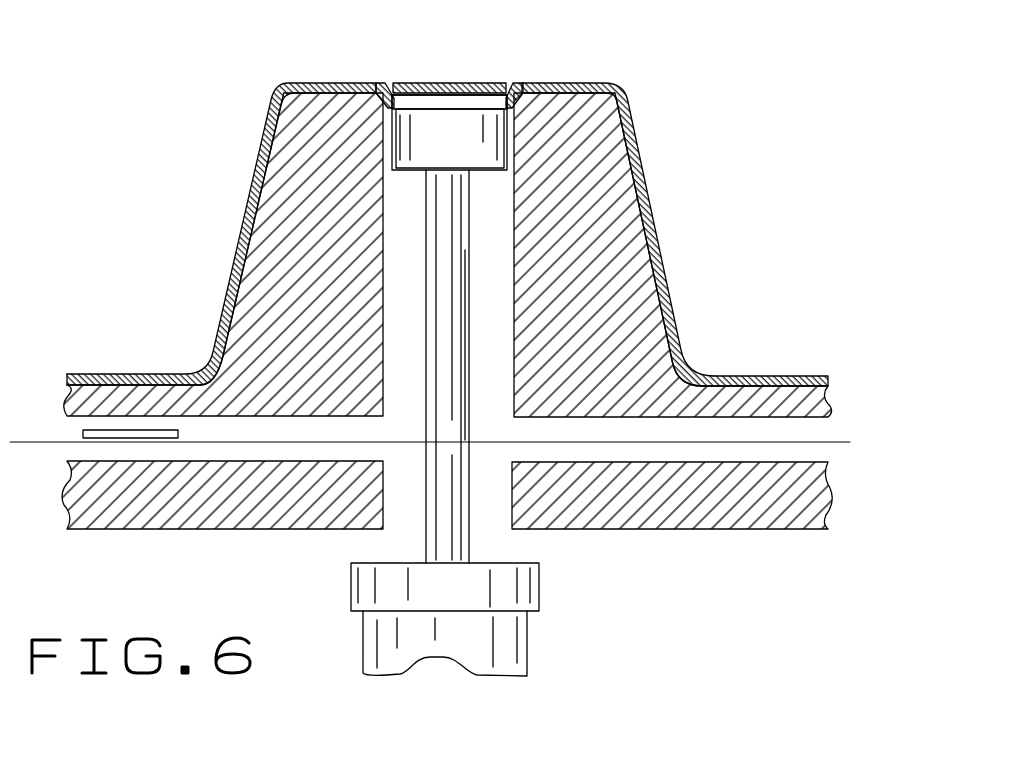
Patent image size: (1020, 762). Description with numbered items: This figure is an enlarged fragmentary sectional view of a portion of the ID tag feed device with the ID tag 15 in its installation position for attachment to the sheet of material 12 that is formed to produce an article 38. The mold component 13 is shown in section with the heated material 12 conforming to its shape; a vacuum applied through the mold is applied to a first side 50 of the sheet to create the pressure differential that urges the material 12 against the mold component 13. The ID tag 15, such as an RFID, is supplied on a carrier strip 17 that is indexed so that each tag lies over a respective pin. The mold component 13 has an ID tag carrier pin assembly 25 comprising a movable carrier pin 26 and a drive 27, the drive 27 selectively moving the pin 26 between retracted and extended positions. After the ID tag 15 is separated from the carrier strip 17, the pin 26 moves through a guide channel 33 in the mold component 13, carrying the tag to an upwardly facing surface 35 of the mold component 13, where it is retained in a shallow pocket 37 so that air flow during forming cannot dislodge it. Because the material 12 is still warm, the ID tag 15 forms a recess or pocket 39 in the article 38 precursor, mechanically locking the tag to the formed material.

The material 12 is at (763, 377).
The mold component 13 is at (622, 197).
The ID tag 15 is at (435, 102).
The carrier strip 17 is at (44, 441).
The ID tag carrier pin assembly 25 is at (548, 596).
The carrier pin 26 is at (500, 102).
The drive 27 is at (363, 655).
The guide channel 33 is at (382, 347).
The upwardly facing surface 35 is at (570, 82).
The pocket 37 is at (385, 88).
The article 38 is at (632, 120).
The pocket 39 is at (452, 85).
The first side 50 is at (156, 373).